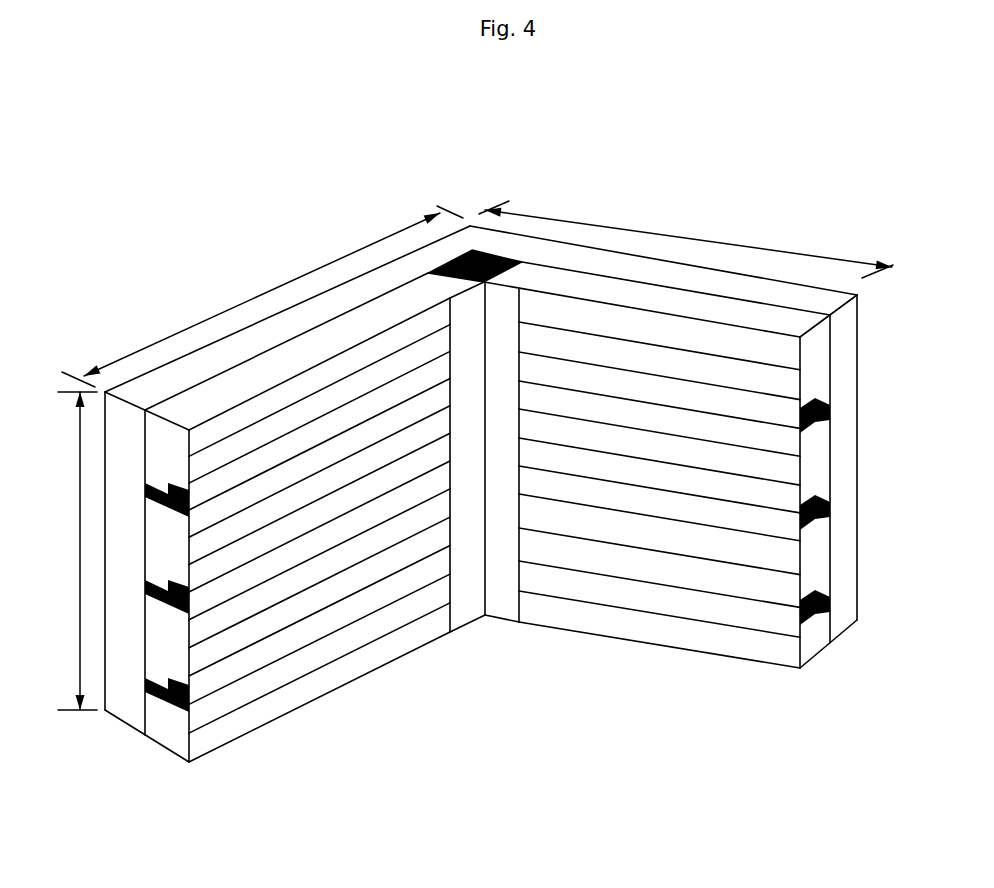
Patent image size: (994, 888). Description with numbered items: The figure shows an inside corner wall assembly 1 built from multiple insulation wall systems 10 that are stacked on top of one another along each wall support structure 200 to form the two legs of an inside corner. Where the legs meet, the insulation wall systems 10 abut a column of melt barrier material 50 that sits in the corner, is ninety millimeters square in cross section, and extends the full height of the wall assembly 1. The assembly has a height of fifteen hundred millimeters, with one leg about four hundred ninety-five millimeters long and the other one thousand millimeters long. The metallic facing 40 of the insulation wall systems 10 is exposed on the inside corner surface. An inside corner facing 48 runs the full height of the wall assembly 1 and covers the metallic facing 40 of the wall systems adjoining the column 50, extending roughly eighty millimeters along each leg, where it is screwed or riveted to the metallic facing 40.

The inside corner wall assembly 1 is at (223, 241).
The insulation wall system 10 is at (813, 640).
The wall support structure 200 is at (132, 710).
The metallic facing 40 is at (410, 640).
The inside corner facing 48 is at (503, 605).
The column of melt barrier material 50 is at (472, 250).